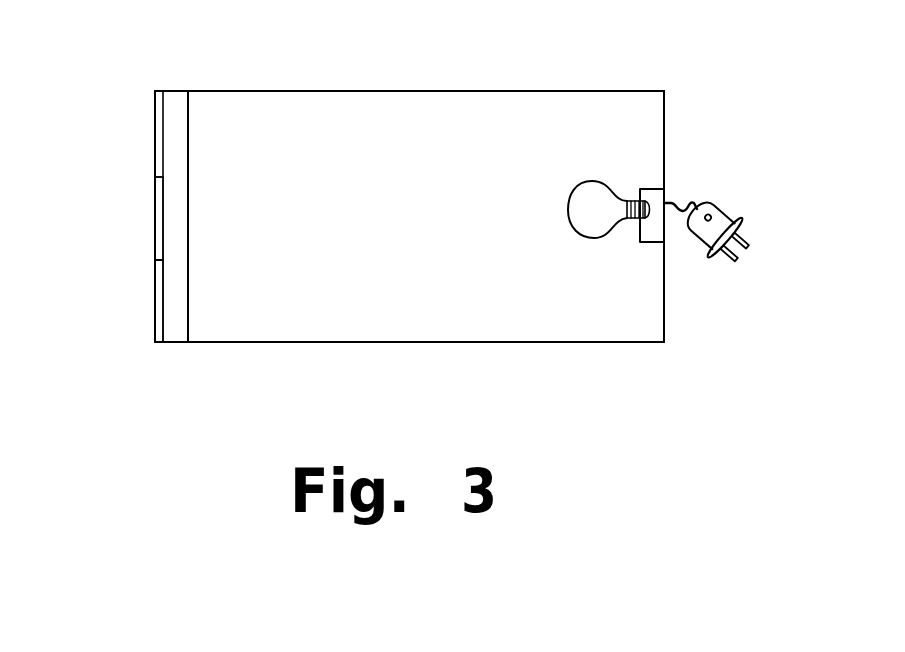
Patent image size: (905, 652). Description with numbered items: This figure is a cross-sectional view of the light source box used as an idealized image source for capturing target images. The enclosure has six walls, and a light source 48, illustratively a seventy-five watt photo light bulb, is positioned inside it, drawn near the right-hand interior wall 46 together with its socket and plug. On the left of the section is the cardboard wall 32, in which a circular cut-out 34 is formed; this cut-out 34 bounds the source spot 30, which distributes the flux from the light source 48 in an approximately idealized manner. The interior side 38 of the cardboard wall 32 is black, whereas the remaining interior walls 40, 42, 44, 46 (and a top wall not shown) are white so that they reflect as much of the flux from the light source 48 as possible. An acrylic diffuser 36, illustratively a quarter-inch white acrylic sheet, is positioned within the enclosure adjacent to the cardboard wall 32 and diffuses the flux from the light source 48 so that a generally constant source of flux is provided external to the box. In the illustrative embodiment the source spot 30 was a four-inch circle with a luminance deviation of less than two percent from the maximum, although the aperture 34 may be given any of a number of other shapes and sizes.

The source spot 30 is at (136, 212).
The cardboard wall 32 is at (154, 128).
The circular cut-out 34 is at (157, 268).
The acrylic diffuser 36 is at (180, 162).
The interior side 38 is at (162, 308).
The interior wall 40 is at (258, 342).
The interior wall 42 is at (326, 90).
The interior wall 44 is at (486, 149).
The interior wall 46 is at (662, 137).
The light source 48 is at (593, 242).